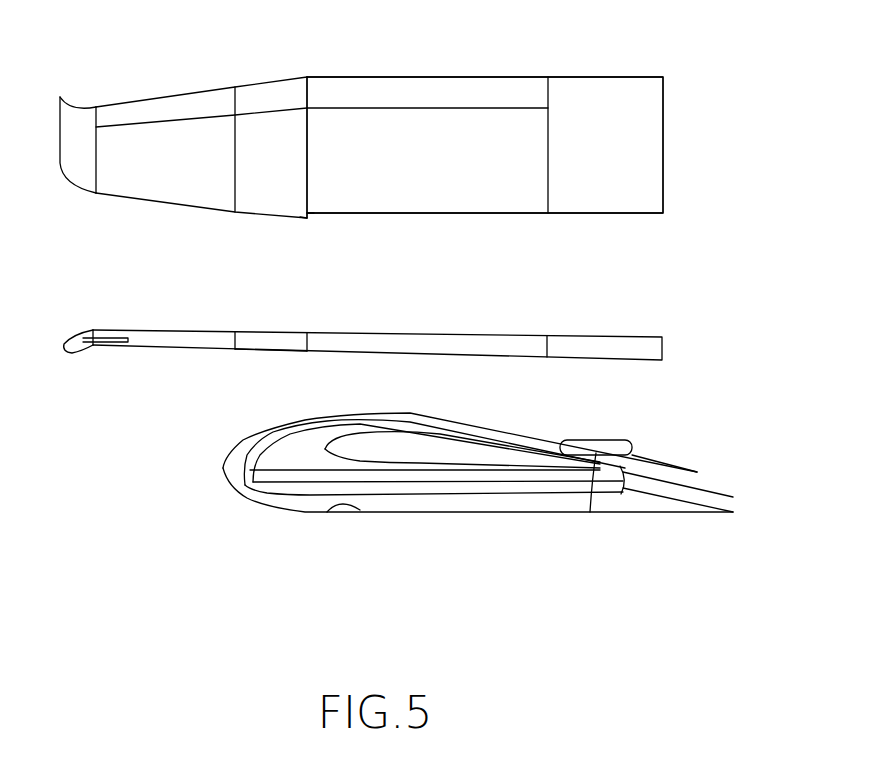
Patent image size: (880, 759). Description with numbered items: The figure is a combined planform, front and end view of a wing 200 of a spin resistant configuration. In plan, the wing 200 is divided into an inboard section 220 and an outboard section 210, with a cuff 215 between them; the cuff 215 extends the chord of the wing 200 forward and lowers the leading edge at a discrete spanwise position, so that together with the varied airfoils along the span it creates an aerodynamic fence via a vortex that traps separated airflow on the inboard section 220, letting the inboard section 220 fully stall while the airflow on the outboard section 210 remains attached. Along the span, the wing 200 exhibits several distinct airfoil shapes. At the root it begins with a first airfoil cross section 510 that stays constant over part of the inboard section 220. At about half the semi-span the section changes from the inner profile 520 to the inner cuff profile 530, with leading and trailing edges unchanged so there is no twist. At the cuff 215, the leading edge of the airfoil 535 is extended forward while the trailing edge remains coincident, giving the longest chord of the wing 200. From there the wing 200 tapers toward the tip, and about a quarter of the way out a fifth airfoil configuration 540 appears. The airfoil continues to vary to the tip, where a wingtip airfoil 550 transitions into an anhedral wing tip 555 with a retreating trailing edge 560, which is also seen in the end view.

The wing 200 is at (420, 168).
The outboard section 210 is at (307, 56).
The cuff 215 is at (307, 218).
The inboard section 220 is at (312, 56).
The first airfoil cross section 510 is at (662, 342).
The inner profile 520 is at (553, 343).
The inner cuff profile 530 is at (308, 333).
The airfoil at the cuff 535 is at (307, 352).
The fifth airfoil configuration 540 is at (236, 332).
The wingtip airfoil 550 is at (98, 332).
The anhedral wing tip 555 is at (89, 346).
The retreating trailing edge 560 is at (74, 104).